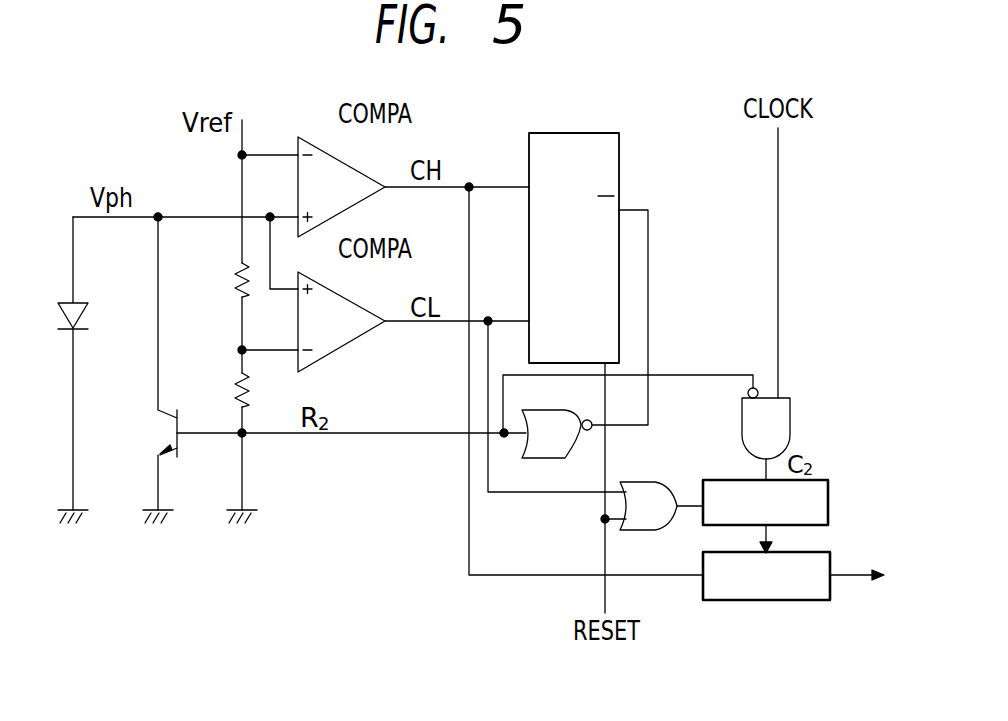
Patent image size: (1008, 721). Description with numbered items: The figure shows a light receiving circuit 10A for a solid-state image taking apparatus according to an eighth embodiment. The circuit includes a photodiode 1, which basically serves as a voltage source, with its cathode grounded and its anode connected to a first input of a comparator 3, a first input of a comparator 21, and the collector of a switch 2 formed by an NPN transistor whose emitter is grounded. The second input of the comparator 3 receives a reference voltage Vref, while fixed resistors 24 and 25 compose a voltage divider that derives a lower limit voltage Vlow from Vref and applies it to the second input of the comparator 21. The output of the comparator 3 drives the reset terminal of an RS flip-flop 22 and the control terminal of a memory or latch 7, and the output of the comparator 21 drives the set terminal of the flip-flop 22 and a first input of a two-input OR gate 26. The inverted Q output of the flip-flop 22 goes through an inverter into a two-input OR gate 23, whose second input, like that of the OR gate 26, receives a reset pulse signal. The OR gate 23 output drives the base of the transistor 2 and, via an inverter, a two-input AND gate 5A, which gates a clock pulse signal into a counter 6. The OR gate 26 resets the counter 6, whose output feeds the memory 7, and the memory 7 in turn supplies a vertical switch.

The photodiode 1 is at (80, 312).
The switch 2 is at (166, 428).
The comparator 3 is at (340, 158).
The comparator 21 is at (335, 290).
The RS flip-flop 22 is at (619, 160).
The two-input OR gate 23 is at (554, 410).
The fixed resistor 24 is at (236, 274).
The fixed resistor 25 is at (236, 372).
The two-input OR gate 26 is at (666, 482).
The two-input AND gate 5A is at (790, 426).
The counter 6 is at (828, 506).
The memory or latch 7 is at (830, 562).
The light receiving circuit 10A is at (606, 101).